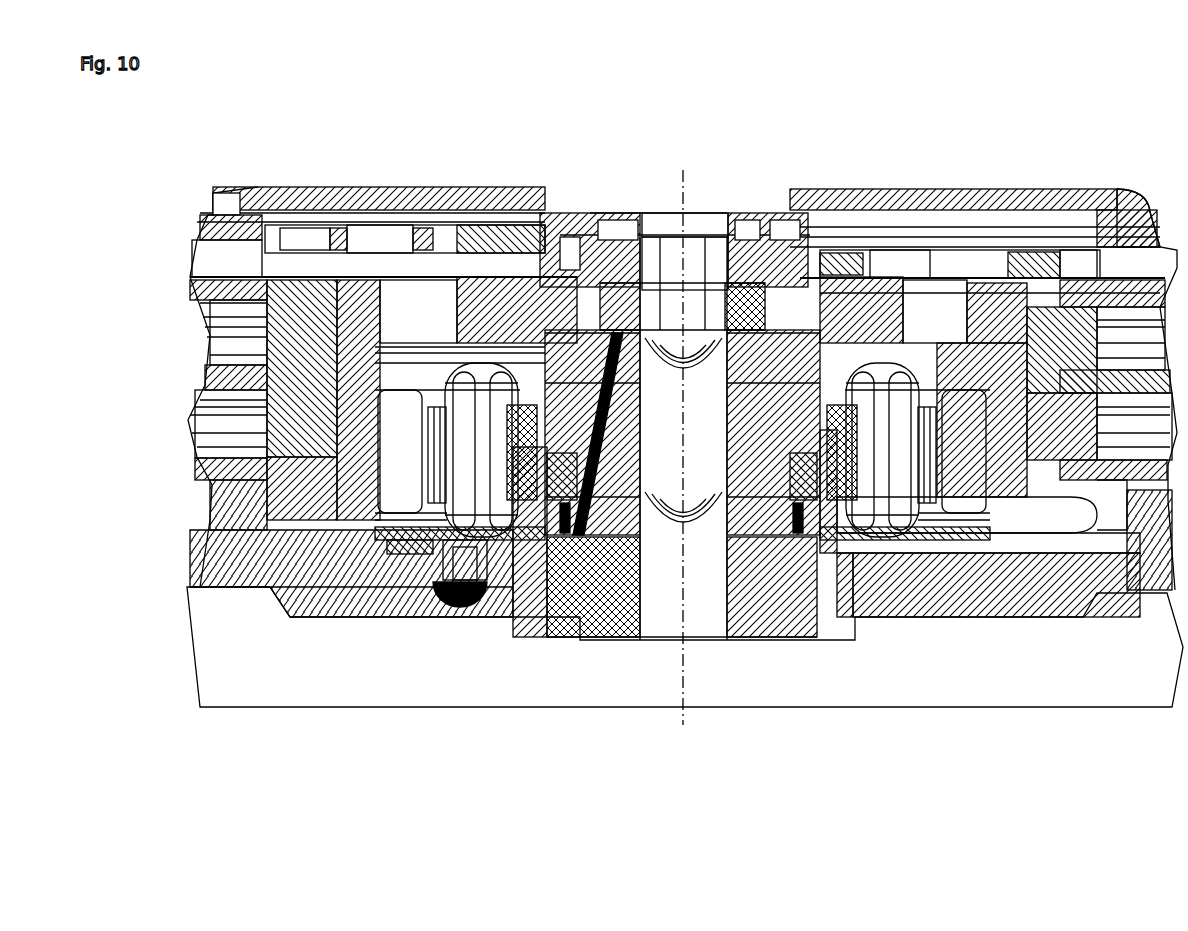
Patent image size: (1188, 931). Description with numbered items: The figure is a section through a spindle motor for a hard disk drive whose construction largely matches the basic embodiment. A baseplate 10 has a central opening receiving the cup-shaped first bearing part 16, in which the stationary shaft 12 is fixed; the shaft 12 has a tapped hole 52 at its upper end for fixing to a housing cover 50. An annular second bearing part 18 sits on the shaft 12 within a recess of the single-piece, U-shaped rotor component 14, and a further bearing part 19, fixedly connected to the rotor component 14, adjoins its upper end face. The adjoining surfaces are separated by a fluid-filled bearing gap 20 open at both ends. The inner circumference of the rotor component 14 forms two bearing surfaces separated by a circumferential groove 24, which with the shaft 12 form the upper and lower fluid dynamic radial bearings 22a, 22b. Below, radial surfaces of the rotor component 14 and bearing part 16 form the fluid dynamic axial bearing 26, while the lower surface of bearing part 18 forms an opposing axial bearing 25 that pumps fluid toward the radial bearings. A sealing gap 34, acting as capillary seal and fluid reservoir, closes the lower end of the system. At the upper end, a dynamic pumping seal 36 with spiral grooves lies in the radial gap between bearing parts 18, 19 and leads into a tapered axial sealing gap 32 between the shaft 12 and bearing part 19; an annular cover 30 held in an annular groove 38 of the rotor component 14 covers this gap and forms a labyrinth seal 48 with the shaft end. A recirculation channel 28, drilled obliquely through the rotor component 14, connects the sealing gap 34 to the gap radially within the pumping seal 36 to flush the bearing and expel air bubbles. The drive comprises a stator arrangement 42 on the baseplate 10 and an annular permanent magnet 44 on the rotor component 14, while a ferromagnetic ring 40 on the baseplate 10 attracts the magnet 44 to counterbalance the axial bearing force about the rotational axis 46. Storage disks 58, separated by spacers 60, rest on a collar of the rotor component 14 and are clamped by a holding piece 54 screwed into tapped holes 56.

The baseplate 10 is at (958, 617).
The shaft 12 is at (668, 553).
The rotor component 14 is at (1005, 189).
The first bearing part 16 is at (803, 637).
The second bearing part 18 is at (725, 200).
The further bearing part 19 is at (767, 200).
The bearing gap 20 is at (787, 189).
The upper fluid dynamic radial bearing 22a is at (650, 200).
The lower fluid dynamic radial bearing 22b is at (650, 640).
The circumferential groove 24 is at (970, 189).
The axial bearing 25 is at (937, 357).
The fluid dynamic axial bearing 26 is at (740, 627).
The recirculation channel 28 is at (567, 640).
The annular cover 30 is at (538, 187).
The sealing gap 32 is at (620, 200).
The sealing gap 34 is at (840, 633).
The dynamic pumping seal 36 is at (600, 200).
The annular groove 38 is at (925, 189).
The ferromagnetic ring 40 is at (357, 617).
The stator arrangement 42 is at (392, 617).
The permanent magnet 44 is at (472, 487).
The rotational axis 46 is at (680, 200).
The labyrinth seal 48 is at (740, 200).
The housing cover 50 is at (377, 187).
The tapped hole 52 is at (710, 200).
The holding piece 54 is at (332, 187).
The tapped holes 56 is at (410, 300).
The storage disks 58 is at (190, 280).
The spacers 60 is at (210, 332).